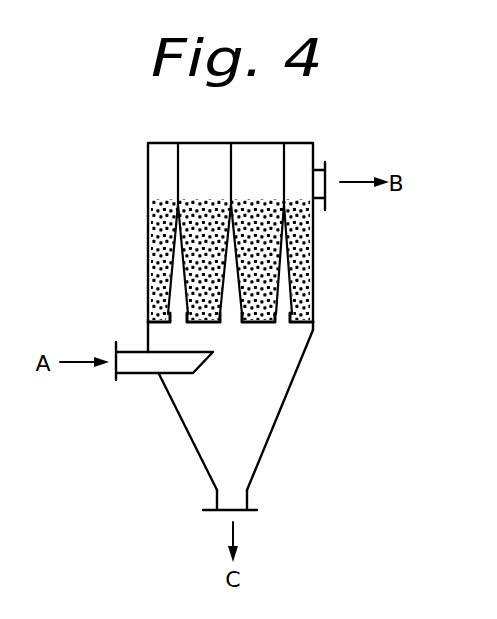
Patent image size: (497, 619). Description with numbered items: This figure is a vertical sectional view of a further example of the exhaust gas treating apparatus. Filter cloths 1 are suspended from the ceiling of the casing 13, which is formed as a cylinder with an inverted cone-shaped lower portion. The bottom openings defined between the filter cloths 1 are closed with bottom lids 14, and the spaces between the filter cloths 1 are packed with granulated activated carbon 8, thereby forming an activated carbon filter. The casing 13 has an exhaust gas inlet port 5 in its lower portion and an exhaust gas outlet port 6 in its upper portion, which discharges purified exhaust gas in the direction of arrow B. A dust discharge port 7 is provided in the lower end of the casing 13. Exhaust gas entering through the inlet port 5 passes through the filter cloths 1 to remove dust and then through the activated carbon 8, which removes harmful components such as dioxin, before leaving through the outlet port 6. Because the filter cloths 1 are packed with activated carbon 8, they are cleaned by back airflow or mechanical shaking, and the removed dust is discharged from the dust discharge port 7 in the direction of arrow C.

The filter cloths 1 is at (293, 298).
The exhaust gas inlet port 5 is at (116, 368).
The exhaust gas outlet port 6 is at (326, 176).
The dust discharge port 7 is at (235, 512).
The granulated activated carbon 8 is at (313, 248).
The casing 13 is at (148, 236).
The bottom lids 14 is at (253, 323).